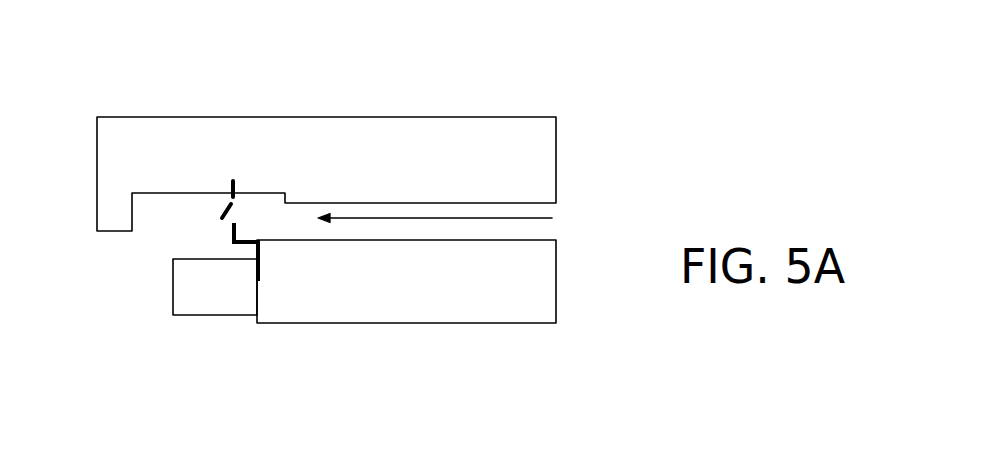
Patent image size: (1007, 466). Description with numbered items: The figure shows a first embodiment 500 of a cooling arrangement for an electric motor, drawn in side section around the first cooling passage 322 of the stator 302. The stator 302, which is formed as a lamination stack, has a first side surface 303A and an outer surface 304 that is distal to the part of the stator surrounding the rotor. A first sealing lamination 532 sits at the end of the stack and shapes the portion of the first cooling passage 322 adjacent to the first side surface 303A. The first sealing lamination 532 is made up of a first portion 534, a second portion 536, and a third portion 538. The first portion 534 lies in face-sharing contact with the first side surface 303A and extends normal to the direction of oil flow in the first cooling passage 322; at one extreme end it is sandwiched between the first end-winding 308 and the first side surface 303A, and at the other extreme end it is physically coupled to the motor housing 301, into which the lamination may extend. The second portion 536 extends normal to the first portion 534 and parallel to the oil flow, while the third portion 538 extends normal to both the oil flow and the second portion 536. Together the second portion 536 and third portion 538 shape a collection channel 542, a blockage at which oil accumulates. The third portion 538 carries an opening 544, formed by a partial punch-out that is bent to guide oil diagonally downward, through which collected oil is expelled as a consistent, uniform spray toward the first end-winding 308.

The first embodiment of a cooling arrangement 500 is at (593, 33).
The motor housing 301 is at (97, 117).
The stator 302 is at (416, 296).
The outer surface 304 is at (462, 240).
The first end-winding 308 is at (227, 298).
The first cooling passage 322 is at (485, 210).
The first sealing lamination 532 is at (234, 183).
The first portion 534 is at (258, 260).
The second portion 536 is at (246, 237).
The third portion 538 is at (231, 200).
The collection channel 542 is at (287, 235).
The opening 544 is at (207, 242).
The first side surface 303A is at (258, 302).